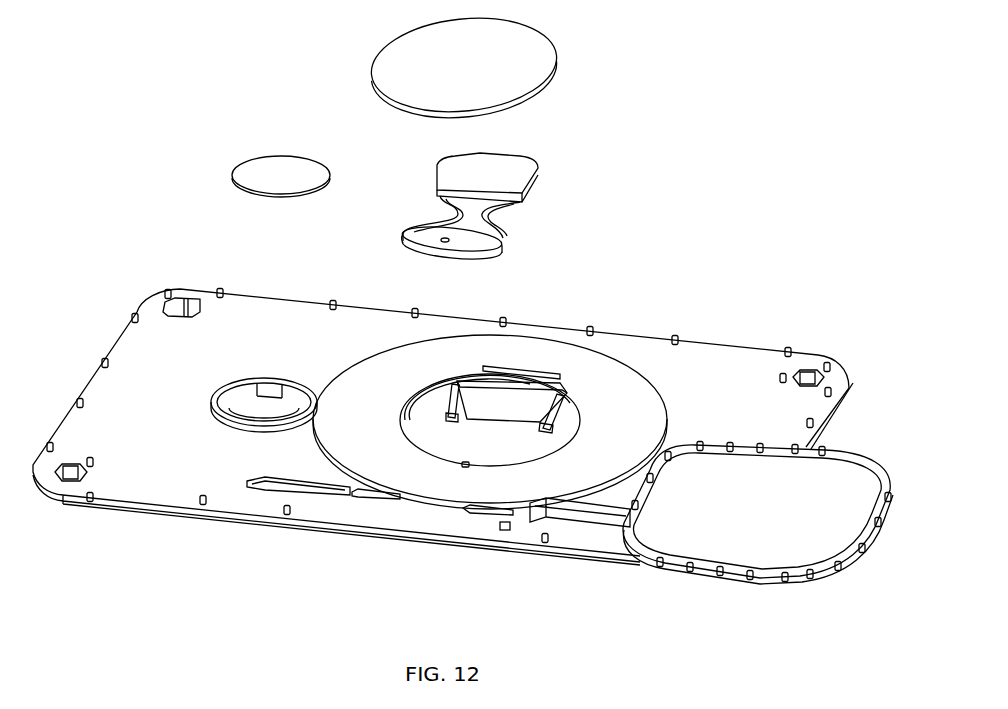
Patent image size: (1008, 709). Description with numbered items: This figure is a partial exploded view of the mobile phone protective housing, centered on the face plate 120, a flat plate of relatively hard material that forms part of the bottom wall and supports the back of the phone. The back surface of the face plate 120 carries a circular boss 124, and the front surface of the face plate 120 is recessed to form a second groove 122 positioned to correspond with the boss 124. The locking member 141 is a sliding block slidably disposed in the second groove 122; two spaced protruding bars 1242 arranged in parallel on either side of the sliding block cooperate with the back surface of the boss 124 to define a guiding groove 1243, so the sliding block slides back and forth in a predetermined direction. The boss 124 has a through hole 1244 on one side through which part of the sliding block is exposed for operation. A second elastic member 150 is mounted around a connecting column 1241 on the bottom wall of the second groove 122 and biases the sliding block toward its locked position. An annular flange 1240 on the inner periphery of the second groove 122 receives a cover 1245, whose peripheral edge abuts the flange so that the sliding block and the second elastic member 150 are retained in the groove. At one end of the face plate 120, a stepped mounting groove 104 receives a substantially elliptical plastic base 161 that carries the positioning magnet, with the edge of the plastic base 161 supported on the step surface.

The cover 1245 is at (558, 37).
The plastic base 161 is at (232, 172).
The locking member 141 is at (545, 163).
The second elastic member 150 is at (490, 240).
The mounting groove 104 is at (247, 394).
The face plate 120 is at (776, 347).
The second groove 122 is at (436, 442).
The boss 124 is at (572, 427).
The annular flange 1240 is at (632, 386).
The connecting column 1241 is at (463, 467).
The protruding bars 1242 is at (453, 384).
The guiding groove 1243 is at (486, 412).
The through hole 1244 is at (533, 391).